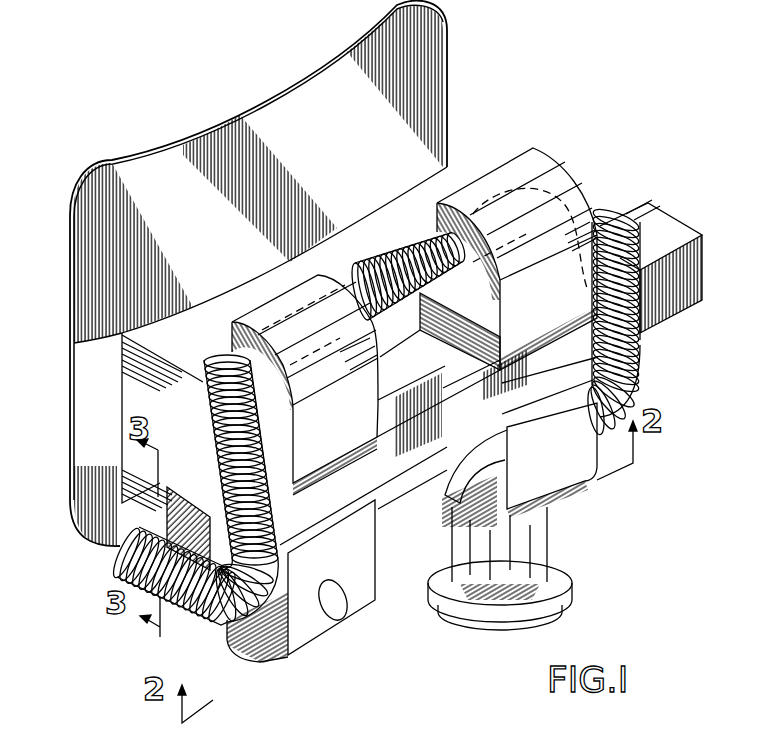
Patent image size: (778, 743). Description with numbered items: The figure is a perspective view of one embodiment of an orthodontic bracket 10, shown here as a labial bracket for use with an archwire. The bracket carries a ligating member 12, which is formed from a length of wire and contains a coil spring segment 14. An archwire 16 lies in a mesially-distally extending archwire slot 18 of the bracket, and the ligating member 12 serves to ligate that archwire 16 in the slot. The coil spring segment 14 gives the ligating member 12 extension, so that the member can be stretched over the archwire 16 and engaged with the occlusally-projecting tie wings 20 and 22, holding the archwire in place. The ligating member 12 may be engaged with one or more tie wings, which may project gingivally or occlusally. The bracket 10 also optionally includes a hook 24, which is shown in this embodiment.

The orthodontic bracket 10 is at (103, 121).
The ligating member 12 is at (407, 250).
The coil spring segment 14 is at (220, 372).
The archwire 16 is at (668, 222).
The archwire slot 18 is at (554, 397).
The tie wing 20 is at (340, 411).
The tie wing 22 is at (553, 298).
The hook 24 is at (548, 535).